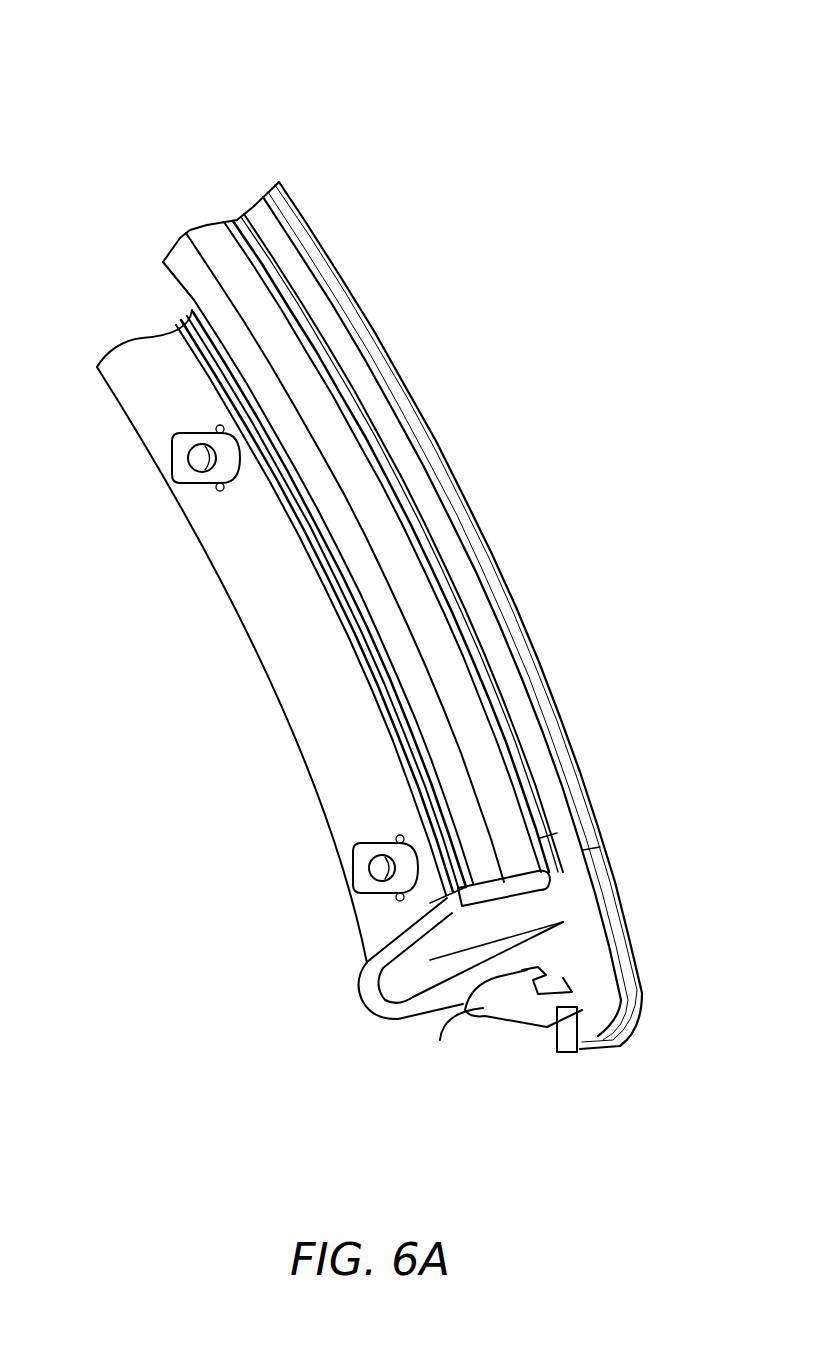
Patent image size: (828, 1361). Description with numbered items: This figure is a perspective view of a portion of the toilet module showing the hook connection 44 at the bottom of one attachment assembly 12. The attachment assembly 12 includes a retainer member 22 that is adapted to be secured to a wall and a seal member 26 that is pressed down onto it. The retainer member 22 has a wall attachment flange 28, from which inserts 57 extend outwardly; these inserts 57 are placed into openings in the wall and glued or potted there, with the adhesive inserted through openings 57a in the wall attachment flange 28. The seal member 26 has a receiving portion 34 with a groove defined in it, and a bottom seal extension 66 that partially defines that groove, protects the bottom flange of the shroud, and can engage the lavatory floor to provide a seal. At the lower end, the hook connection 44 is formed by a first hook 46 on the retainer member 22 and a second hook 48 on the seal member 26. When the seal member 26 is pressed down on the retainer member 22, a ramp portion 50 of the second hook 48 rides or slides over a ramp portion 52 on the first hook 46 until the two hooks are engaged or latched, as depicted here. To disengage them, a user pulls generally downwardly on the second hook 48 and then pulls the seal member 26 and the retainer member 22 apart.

The attachment assembly 12 is at (208, 128).
The retainer member 22 is at (148, 350).
The seal member 26 is at (407, 555).
The wall attachment flange 28 is at (272, 618).
The receiving portion 34 is at (502, 590).
The hook connection 44 is at (509, 1050).
The first hook 46 is at (557, 952).
The second hook 48 is at (484, 1017).
The ramp portion 50 is at (478, 1003).
The ramp portion 52 is at (568, 972).
The insert 57 is at (175, 457).
The opening 57a is at (218, 428).
The bottom seal extension 66 is at (568, 1052).